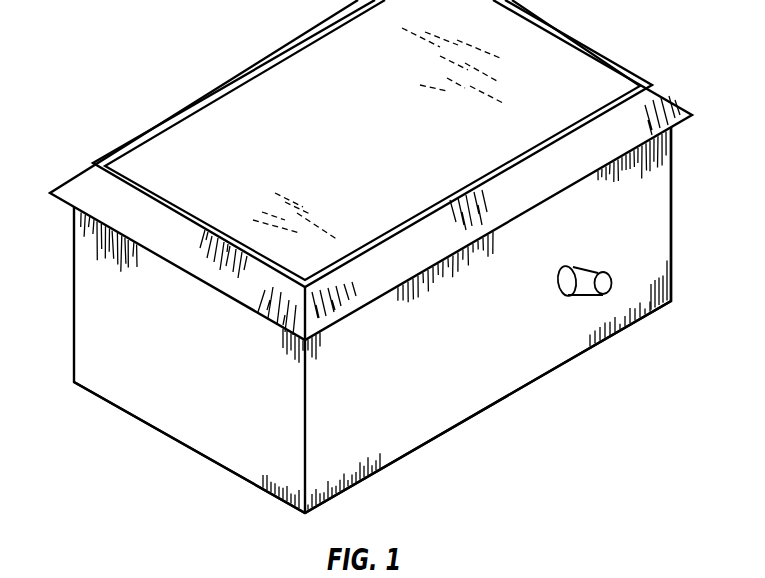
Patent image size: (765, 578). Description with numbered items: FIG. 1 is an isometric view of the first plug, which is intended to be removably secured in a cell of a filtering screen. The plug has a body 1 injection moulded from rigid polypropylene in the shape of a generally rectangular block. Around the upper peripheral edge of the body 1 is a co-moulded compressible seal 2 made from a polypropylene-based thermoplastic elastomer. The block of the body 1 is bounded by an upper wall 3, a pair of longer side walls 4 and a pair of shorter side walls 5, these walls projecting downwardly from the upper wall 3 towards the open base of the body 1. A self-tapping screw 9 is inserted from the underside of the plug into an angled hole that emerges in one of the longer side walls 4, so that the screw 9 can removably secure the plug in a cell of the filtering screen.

The body 1 is at (72, 296).
The compressible seal 2 is at (668, 102).
The upper wall 3 is at (257, 117).
The longer side wall 4 is at (508, 363).
The shorter side wall 5 is at (185, 408).
The self-tapping screw 9 is at (612, 282).